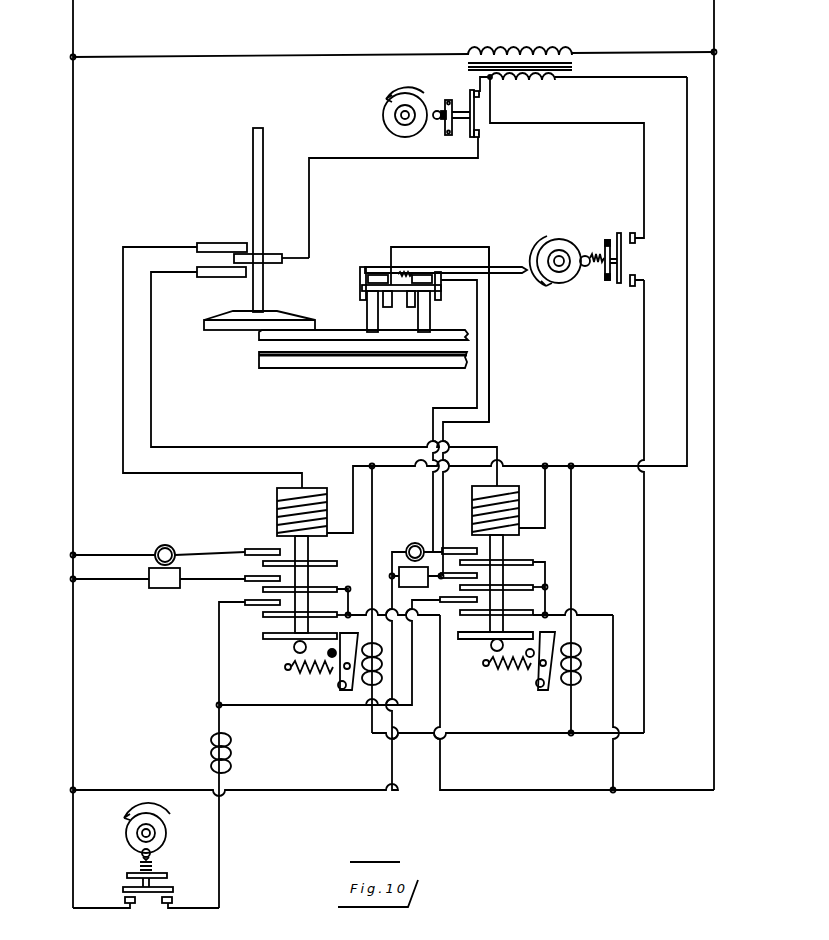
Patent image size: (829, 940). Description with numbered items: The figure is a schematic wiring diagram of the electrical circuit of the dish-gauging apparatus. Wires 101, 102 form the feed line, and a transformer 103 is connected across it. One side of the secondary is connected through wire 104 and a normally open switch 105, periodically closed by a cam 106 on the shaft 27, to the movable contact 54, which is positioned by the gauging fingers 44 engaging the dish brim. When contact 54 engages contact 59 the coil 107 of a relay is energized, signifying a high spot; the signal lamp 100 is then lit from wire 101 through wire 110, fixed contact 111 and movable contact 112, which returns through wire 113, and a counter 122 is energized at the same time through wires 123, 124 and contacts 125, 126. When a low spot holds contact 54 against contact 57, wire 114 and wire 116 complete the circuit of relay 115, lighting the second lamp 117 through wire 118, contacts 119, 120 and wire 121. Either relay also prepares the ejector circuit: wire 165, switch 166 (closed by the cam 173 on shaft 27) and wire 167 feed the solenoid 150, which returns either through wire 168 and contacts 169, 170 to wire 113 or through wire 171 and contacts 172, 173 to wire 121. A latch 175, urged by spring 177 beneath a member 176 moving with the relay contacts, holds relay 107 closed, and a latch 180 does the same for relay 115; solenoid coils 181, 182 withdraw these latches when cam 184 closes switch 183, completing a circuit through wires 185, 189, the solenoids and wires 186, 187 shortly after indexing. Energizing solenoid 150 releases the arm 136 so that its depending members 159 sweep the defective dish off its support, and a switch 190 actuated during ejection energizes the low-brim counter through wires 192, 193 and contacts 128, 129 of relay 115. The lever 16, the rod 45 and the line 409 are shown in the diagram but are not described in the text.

The plate 16 is at (262, 346).
The shaft 27 is at (408, 112).
The fingers 44 is at (295, 316).
The rod 45 is at (263, 222).
The movable contact 54 is at (280, 263).
The contact 57 is at (208, 277).
The contact 59 is at (242, 245).
The signal lamp 100 is at (168, 549).
The wire 101 is at (75, 33).
The wire 102 is at (712, 16).
The transformer 103 is at (572, 56).
The wire 104 is at (404, 158).
The normally open switch 105 is at (476, 126).
The cam 106 is at (388, 127).
The coil of a relay 107 is at (277, 506).
The wire 110 is at (131, 555).
The fixed contact 111 is at (258, 545).
The movable contact 112 is at (325, 559).
The wire 113 is at (440, 703).
The wire 114 is at (318, 445).
The relay 115 is at (314, 504).
The wire 116 is at (512, 478).
The second lamp 117 is at (407, 550).
The wire 118 is at (303, 790).
The contact 119 is at (466, 541).
The contact 120 is at (513, 557).
The wire 121 is at (613, 672).
The counter 122 is at (153, 588).
The wire 123 is at (100, 581).
The wire 124 is at (207, 580).
The contact 125 is at (252, 572).
The contact 126 is at (312, 590).
The contact 128 is at (455, 580).
The contact 129 is at (475, 588).
The arm 136 is at (505, 267).
The solenoid 150 is at (231, 754).
The depending members 159 is at (369, 312).
The wire 165 is at (90, 908).
The switch 166 is at (173, 890).
The wire 167 is at (221, 855).
The wire 168 is at (219, 666).
The contact 169 is at (245, 605).
The contact 170 is at (261, 616).
The wire 171 is at (318, 706).
The contact 172 is at (458, 603).
The contact 173 is at (473, 616).
The latch 175 is at (340, 680).
The member 176 is at (283, 640).
The spring 177 is at (298, 673).
The latch 180 is at (532, 680).
The solenoid coil 181 is at (376, 685).
The solenoid coil 182 is at (582, 656).
The switch 183 is at (624, 262).
The cam 184 is at (570, 240).
The wire 185 is at (644, 178).
The wire 186 is at (372, 522).
The wire 187 is at (571, 530).
The wire 189 is at (484, 733).
The switch 190 is at (360, 285).
The wire 192 is at (462, 405).
The wire 193 is at (489, 383).
The conductor 409 is at (652, 463).